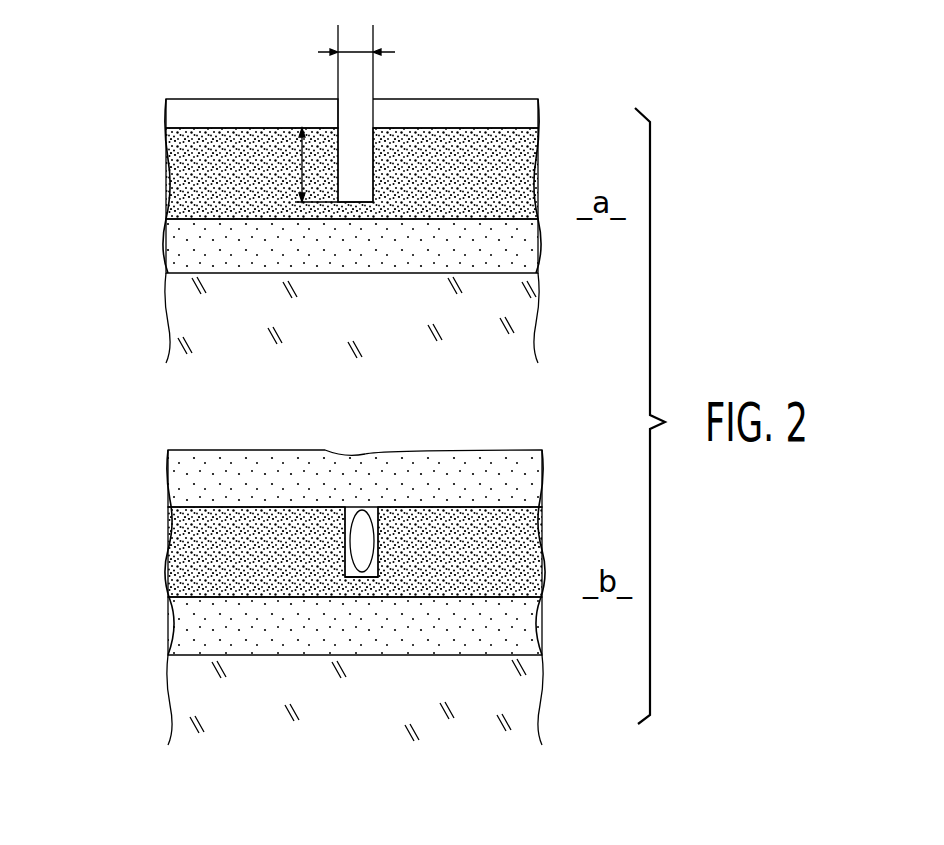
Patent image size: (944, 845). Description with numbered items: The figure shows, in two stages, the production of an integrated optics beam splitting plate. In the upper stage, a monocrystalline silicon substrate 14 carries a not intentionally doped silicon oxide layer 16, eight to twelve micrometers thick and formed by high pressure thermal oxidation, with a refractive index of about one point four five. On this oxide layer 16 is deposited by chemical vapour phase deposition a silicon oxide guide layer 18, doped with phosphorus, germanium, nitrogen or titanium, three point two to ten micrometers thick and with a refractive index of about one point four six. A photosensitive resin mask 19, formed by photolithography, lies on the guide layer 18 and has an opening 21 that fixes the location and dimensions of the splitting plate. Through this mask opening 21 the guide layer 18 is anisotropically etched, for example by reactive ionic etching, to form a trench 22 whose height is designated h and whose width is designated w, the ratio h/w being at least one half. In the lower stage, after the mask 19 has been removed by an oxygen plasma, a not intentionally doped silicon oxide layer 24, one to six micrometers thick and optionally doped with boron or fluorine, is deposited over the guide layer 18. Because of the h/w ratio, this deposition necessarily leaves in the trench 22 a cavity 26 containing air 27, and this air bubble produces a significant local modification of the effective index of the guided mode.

The monocrystalline silicon substrate 14 is at (208, 307).
The silicon oxide layer 16 is at (205, 250).
The silicon oxide guide layer 18 is at (195, 177).
The photosensitive resin mask 19 is at (188, 112).
The opening 21 is at (338, 110).
The trench 22 is at (376, 151).
The silicon oxide layer 24 is at (215, 478).
The cavity 26 is at (345, 578).
The air 27 is at (360, 528).